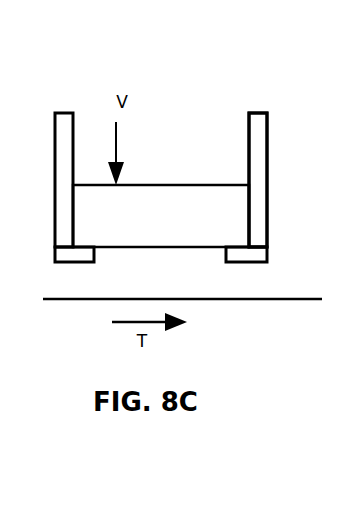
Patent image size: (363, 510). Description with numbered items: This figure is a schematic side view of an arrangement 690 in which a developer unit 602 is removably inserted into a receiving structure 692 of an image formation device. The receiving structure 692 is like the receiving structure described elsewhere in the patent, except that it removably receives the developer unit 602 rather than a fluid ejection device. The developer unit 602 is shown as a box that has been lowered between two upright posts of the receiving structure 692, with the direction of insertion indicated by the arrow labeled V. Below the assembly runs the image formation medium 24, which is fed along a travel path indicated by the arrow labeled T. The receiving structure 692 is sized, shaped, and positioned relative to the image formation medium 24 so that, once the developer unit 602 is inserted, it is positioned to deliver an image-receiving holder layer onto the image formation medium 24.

The developer unit assembly 690 is at (94, 50).
The developer unit 602 is at (214, 176).
The receiving structure 692 is at (258, 101).
The image formation medium 24 is at (272, 299).